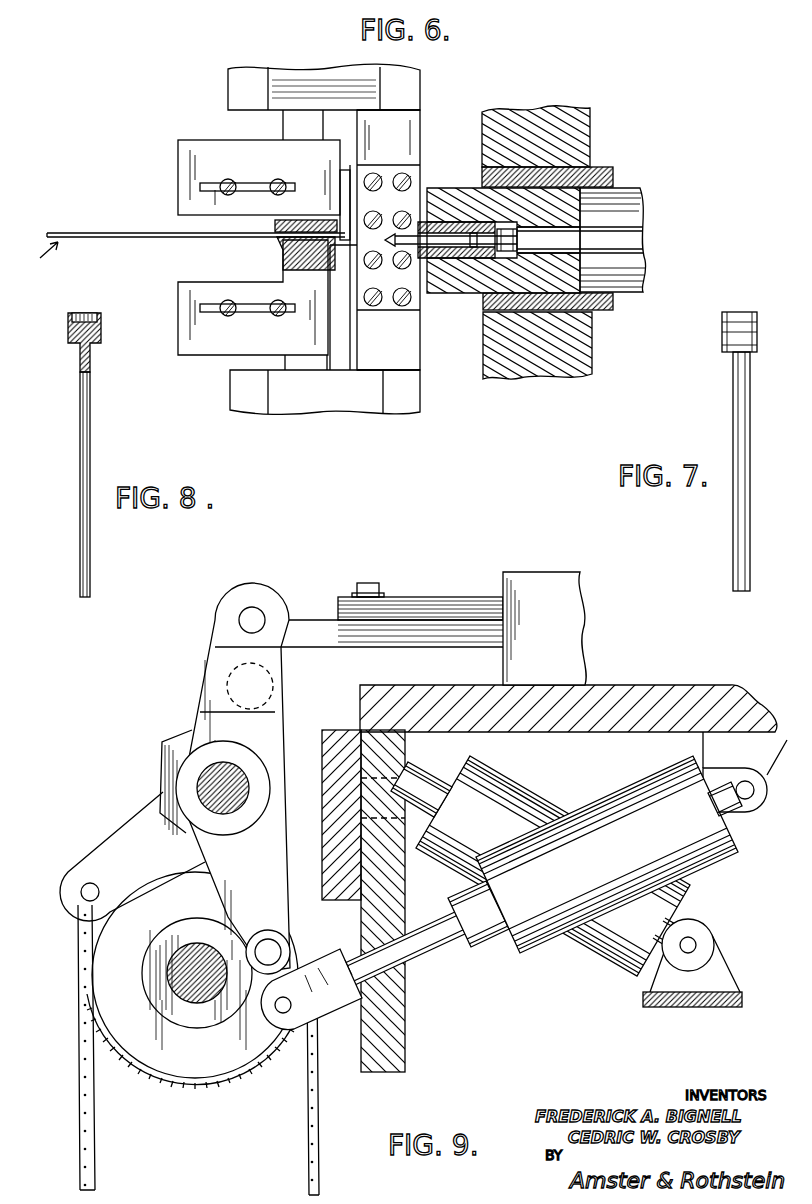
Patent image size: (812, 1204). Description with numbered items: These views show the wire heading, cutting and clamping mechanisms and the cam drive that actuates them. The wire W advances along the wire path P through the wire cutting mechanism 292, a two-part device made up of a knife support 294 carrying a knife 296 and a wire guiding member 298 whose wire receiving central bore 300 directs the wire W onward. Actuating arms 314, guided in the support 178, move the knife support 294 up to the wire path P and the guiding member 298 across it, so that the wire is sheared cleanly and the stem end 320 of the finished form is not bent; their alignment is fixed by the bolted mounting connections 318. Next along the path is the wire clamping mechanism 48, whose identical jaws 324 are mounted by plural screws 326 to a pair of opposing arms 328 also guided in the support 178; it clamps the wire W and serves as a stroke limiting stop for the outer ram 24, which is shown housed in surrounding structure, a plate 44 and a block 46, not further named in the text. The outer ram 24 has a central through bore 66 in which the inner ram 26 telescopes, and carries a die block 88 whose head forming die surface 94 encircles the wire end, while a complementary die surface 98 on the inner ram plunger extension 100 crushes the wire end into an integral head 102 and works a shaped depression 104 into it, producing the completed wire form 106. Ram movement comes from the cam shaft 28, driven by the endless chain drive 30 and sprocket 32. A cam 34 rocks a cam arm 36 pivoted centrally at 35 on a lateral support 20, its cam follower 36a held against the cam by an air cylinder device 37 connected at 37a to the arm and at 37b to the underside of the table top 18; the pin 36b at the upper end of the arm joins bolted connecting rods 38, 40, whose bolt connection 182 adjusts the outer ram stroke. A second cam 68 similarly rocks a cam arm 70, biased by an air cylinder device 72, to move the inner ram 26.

In FIG. 9, the table top 18 is at (680, 688).
In FIG. 9, the lateral support 20 is at (168, 750).
In FIG. 6, the outer ram 24 is at (635, 238).
In FIG. 6, the inner ram 26 is at (575, 245).
In FIG. 9, the cam shaft 28 is at (180, 972).
In FIG. 9, the endless chain drive 30 is at (88, 1168).
In FIG. 9, the sprocket 32 is at (216, 1095).
In FIG. 9, the cam 34 is at (182, 978).
In FIG. 9, the pivot 35 is at (228, 806).
In FIG. 9, the cam arm 36 is at (257, 765).
In FIG. 9, the cam follower 36a is at (283, 946).
In FIG. 9, the pin 36b is at (257, 610).
In FIG. 9, the air cylinder device 37 is at (558, 963).
In FIG. 9, the cam arm connection 37a is at (291, 1010).
In FIG. 9, the table top connection 37b is at (697, 945).
In FIG. 9, the connecting rod 38 is at (312, 622).
In FIG. 9, the connecting rod 40 is at (446, 604).
In FIG. 6, the plate 44 is at (613, 177).
In FIG. 6, the block 46 is at (582, 108).
In FIG. 9, the block 46 is at (548, 626).
In FIG. 6, the wire clamping mechanism 48 is at (428, 125).
In FIG. 6, the central through bore 66 is at (505, 260).
In FIG. 9, the cam 68 is at (183, 1070).
In FIG. 9, the cam arm 70 is at (135, 830).
In FIG. 9, the air cylinder device 72 is at (541, 811).
In FIG. 6, the die block 88 is at (493, 235).
In FIG. 6, the head forming die surface 94 is at (476, 252).
In FIG. 6, the die surface 98 is at (443, 222).
In FIG. 6, the inner ram plunger extension 100 is at (463, 233).
In FIG. 6, the head 102 is at (420, 248).
In FIG. 8, the head 102 is at (72, 326).
In FIG. 7, the head 102 is at (725, 336).
In FIG. 8, the shaped depression 104 is at (88, 318).
In FIG. 8, the completed wire form 106 is at (59, 484).
In FIG. 7, the completed wire form 106 is at (731, 471).
In FIG. 6, the support 178 is at (280, 73).
In FIG. 9, the bolt connection 182 is at (375, 586).
In FIG. 6, the wire cutting mechanism 292 is at (240, 225).
In FIG. 6, the knife support 294 is at (178, 158).
In FIG. 6, the knife 296 is at (340, 185).
In FIG. 6, the wire guiding member 298 is at (283, 266).
In FIG. 6, the wire receiving central bore 300 is at (305, 226).
In FIG. 6, the actuating arm 314 is at (298, 118).
In FIG. 6, the bolted mounting connection 318 is at (253, 170).
In FIG. 6, the stem end 320 is at (350, 250).
In FIG. 6, the jaws 324 is at (418, 178).
In FIG. 6, the screws 326 is at (402, 178).
In FIG. 6, the opposing arms 328 is at (418, 125).
In FIG. 6, the wire W is at (80, 233).
In FIG. 8, the wire W is at (80, 548).
In FIG. 7, the wire W is at (752, 424).
In FIG. 6, the wire path P is at (41, 259).